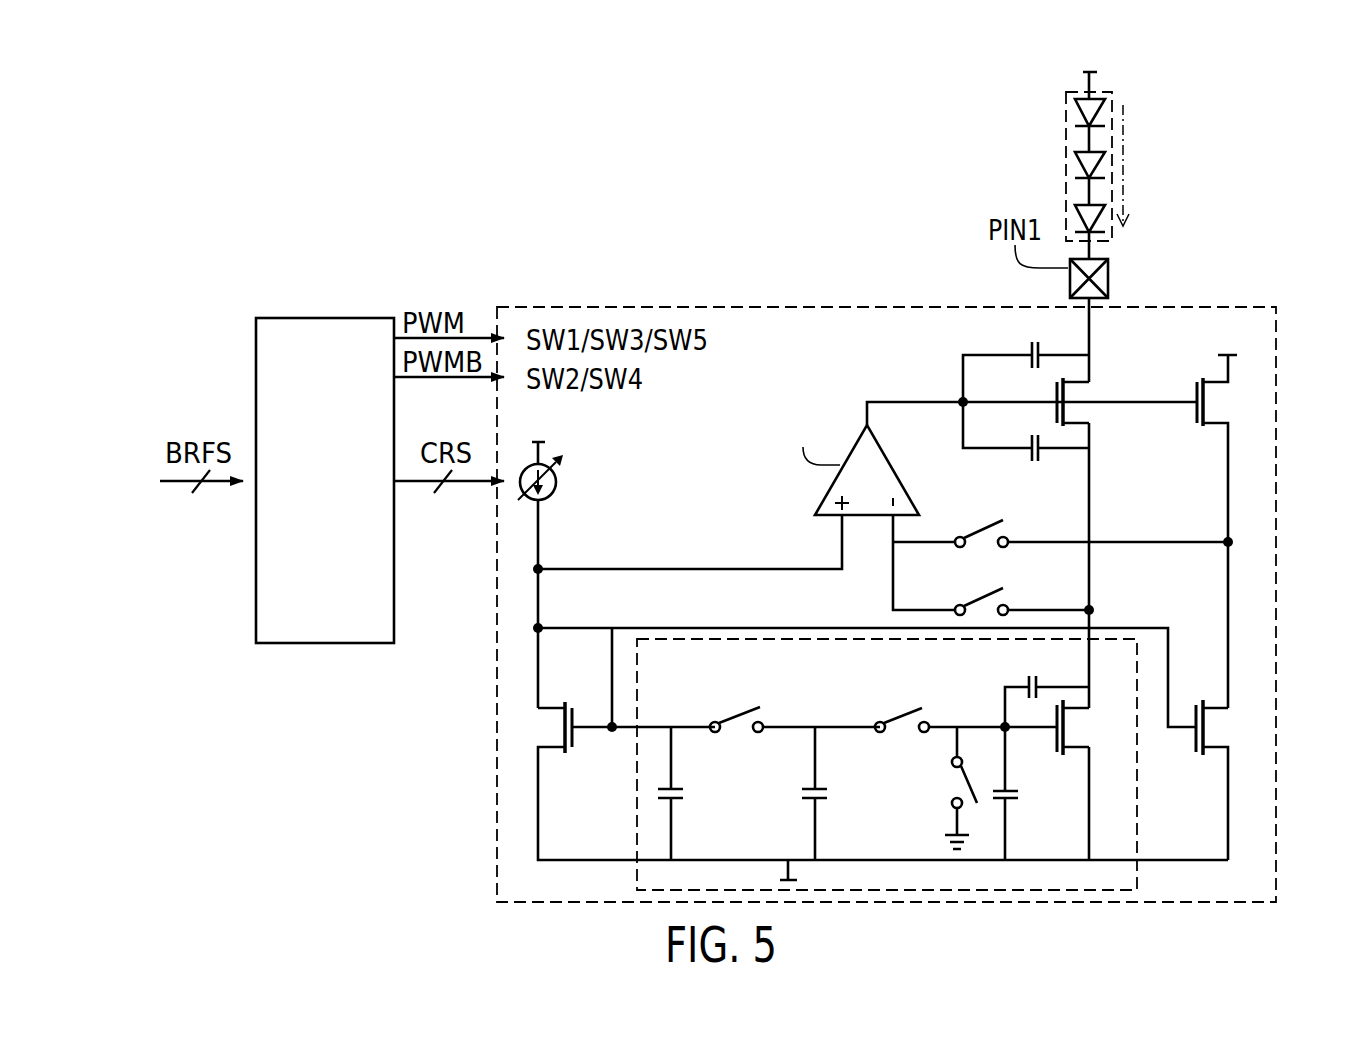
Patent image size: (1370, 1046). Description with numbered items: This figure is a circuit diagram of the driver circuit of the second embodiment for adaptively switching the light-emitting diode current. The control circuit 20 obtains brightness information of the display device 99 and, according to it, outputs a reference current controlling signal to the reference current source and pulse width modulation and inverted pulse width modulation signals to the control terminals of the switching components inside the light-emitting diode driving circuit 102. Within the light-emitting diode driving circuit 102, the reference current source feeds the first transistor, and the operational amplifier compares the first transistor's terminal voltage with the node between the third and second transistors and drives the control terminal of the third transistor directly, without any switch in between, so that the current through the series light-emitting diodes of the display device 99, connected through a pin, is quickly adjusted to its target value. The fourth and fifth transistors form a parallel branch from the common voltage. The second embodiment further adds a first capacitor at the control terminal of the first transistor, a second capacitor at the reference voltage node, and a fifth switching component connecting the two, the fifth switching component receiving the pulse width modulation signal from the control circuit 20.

The control circuit 20 is at (324, 318).
The display device 99 is at (1066, 143).
The light-emitting diode driving circuit 102 is at (792, 307).